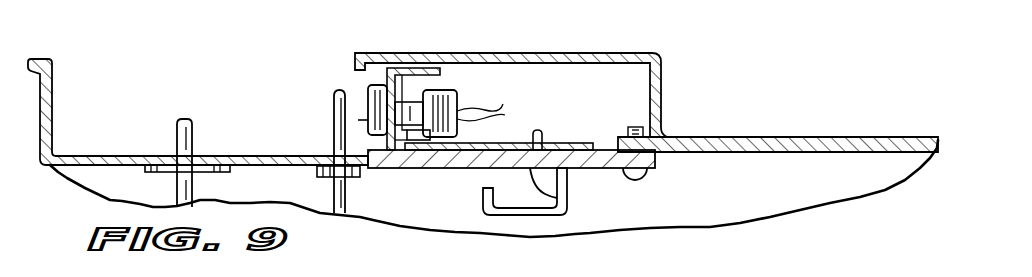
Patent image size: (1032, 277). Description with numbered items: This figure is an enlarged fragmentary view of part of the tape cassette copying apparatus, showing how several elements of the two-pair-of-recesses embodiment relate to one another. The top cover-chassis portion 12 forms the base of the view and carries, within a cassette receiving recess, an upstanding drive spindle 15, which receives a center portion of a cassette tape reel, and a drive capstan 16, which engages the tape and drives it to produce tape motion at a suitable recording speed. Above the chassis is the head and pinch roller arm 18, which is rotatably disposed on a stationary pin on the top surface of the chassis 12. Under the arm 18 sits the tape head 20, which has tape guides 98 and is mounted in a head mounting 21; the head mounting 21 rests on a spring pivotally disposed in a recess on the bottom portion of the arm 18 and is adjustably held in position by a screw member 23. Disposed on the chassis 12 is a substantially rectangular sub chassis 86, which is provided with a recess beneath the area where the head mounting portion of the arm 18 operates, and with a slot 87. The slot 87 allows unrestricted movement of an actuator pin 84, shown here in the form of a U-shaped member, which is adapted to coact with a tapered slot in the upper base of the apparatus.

The cover-chassis portion 12 is at (228, 157).
The drive spindle 15 is at (183, 118).
The drive capstan 16 is at (333, 127).
The head and pinch roller arm 18 is at (447, 74).
The tape head 20 is at (367, 97).
The head mounting 21 is at (428, 123).
The screw member 23 is at (418, 141).
The actuator pin 84 is at (483, 200).
The sub chassis 86 is at (607, 143).
The slot 87 is at (568, 199).
The tape guides 98 is at (360, 104).